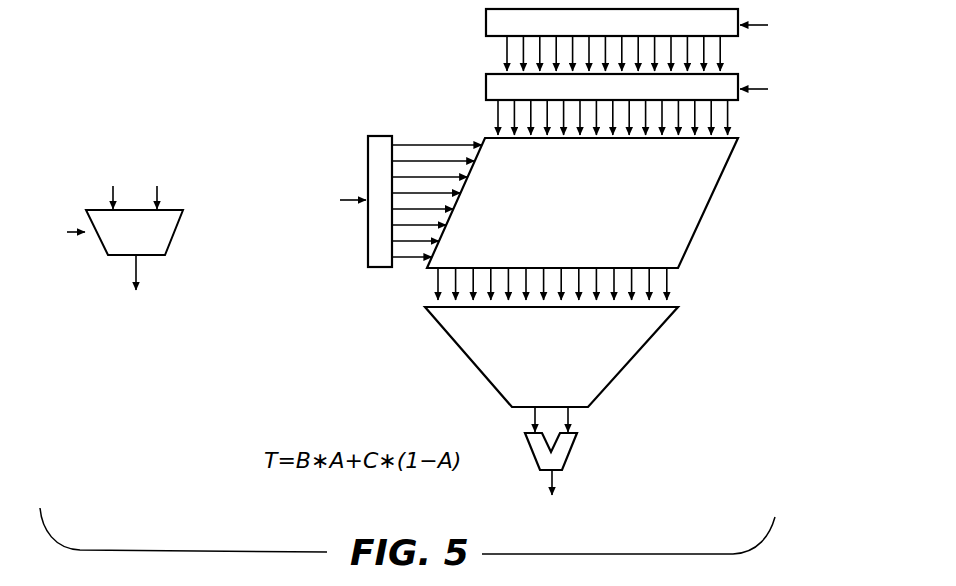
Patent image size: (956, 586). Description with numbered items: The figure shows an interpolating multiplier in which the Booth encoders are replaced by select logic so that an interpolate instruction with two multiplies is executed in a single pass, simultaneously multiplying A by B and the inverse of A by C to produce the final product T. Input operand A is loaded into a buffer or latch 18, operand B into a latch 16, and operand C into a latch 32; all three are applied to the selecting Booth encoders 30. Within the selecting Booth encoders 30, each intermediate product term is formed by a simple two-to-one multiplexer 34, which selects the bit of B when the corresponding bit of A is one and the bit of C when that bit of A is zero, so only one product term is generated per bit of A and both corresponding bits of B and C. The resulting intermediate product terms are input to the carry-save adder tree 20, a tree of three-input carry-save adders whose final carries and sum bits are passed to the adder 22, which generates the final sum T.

The latch 16 is at (486, 22).
The latch 32 is at (486, 82).
The latch 18 is at (378, 134).
The selecting Booth encoders 30 is at (700, 223).
The carry-save adder tree 20 is at (615, 377).
The adder 22 is at (570, 452).
The multiplexer 34 is at (173, 243).